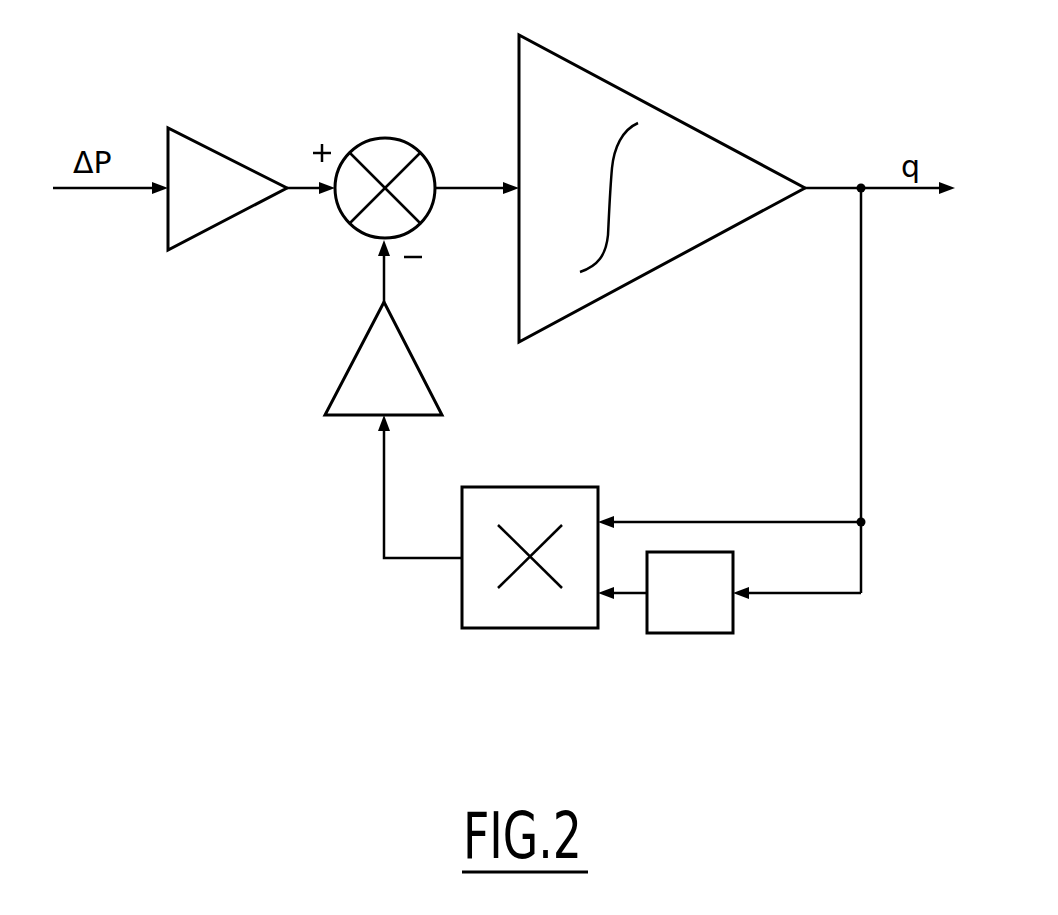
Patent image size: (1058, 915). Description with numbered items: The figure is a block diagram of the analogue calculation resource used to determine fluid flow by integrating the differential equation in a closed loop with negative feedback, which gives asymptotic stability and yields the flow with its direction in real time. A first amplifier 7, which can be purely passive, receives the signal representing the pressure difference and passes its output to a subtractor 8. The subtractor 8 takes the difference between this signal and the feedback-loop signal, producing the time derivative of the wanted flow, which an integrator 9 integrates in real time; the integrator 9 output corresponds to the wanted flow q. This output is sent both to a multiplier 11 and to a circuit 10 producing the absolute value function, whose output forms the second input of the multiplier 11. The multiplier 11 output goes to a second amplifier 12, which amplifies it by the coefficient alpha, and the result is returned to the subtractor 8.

The first amplifier 7 is at (211, 144).
The subtractor 8 is at (385, 137).
The integrator 9 is at (680, 121).
The circuit producing the absolute value function 10 is at (700, 636).
The multiplier 11 is at (537, 630).
The second amplifier 12 is at (338, 418).